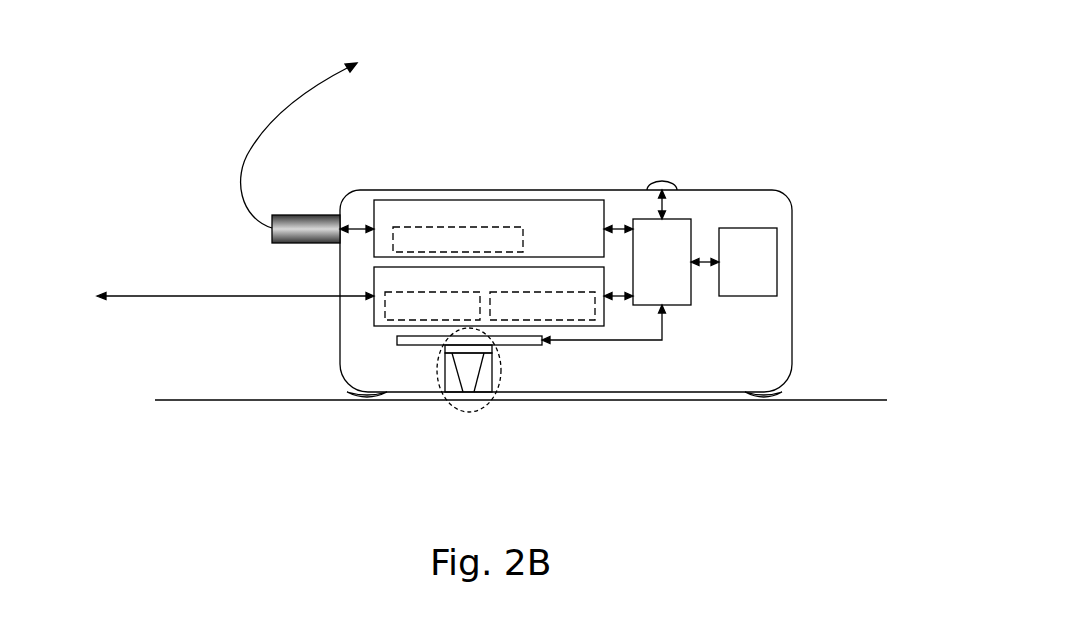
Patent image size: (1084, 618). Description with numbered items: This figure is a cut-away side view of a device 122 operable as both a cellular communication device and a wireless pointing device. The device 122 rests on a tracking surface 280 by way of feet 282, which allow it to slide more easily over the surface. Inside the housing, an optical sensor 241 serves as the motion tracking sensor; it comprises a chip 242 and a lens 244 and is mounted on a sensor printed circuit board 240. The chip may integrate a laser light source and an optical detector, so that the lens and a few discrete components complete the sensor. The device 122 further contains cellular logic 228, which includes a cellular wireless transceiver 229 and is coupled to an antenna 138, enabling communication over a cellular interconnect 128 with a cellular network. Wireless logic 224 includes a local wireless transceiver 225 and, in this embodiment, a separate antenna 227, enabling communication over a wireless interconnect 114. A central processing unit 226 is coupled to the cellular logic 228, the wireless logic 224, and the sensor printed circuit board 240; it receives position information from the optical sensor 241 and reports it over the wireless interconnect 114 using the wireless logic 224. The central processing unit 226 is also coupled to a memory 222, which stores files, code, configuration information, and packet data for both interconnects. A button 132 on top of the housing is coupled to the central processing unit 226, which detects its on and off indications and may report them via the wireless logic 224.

The device 122 is at (792, 307).
The tracking surface 280 is at (835, 400).
The feet 282 is at (352, 397).
The button 132 is at (660, 182).
The antenna 138 is at (302, 215).
The cellular interconnect 128 is at (310, 88).
The wireless interconnect 114 is at (205, 296).
The cellular logic 228 is at (590, 221).
The cellular wireless transceiver 229 is at (505, 248).
The wireless logic 224 is at (590, 288).
The separate antenna 227 is at (475, 316).
The local wireless transceiver 225 is at (590, 316).
The central processing unit (CPU) 226 is at (680, 283).
The memory (MEM) 222 is at (767, 283).
The sensor printed circuit board (PCB) 240 is at (522, 347).
The chip 242 is at (445, 350).
The lens 244 is at (492, 378).
The optical sensor 241 is at (486, 408).